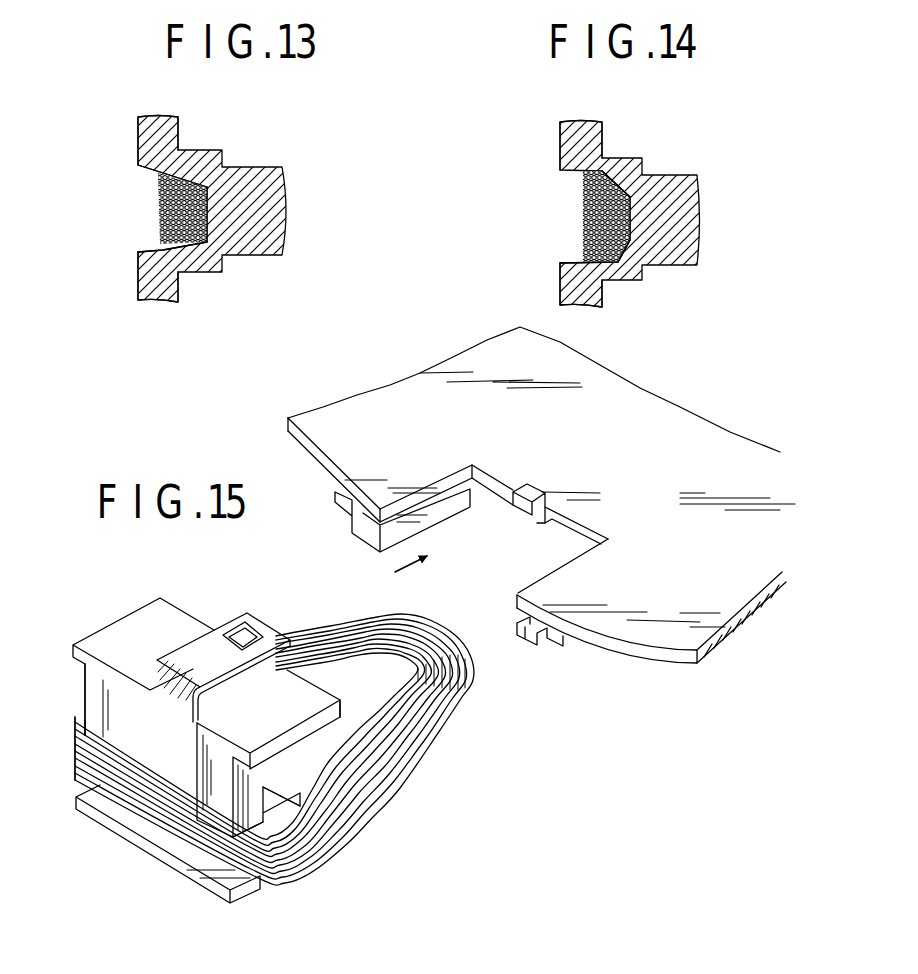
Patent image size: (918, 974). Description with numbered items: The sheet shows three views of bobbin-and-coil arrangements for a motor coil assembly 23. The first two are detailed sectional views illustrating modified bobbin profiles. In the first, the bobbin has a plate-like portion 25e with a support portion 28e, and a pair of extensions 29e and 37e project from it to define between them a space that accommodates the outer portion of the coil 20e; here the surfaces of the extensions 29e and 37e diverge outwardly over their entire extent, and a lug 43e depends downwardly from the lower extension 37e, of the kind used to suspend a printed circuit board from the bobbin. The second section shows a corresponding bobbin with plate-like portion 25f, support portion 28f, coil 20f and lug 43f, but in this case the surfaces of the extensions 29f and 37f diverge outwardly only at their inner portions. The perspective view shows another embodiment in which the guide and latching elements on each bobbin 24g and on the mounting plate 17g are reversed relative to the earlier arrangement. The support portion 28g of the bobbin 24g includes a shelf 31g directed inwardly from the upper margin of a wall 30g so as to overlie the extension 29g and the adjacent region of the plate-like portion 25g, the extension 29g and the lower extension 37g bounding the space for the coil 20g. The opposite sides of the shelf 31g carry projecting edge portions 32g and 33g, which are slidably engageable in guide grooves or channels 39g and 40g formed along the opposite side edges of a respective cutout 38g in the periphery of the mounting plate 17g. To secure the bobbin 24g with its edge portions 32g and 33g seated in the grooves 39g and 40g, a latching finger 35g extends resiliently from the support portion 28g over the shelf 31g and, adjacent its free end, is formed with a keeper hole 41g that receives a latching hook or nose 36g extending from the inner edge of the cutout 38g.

In FIG. 13, the plate-like portion 25e is at (283, 193).
In FIG. 13, the support portion 28e is at (171, 132).
In FIG. 13, the extension 29e is at (146, 169).
In FIG. 13, the coil 20e is at (160, 233).
In FIG. 13, the extension 37e is at (143, 252).
In FIG. 13, the lug 43e is at (172, 290).
In FIG. 14, the plate-like portion 25f is at (688, 195).
In FIG. 14, the support portion 28f is at (605, 135).
In FIG. 14, the extension 29f is at (617, 180).
In FIG. 14, the coil 20f is at (587, 227).
In FIG. 14, the extension 37f is at (613, 258).
In FIG. 14, the lug 43f is at (598, 307).
In FIG. 15, the mounting plate 17g is at (647, 623).
In FIG. 15, the guide groove 40g is at (437, 503).
In FIG. 15, the latching hook 36g is at (530, 491).
In FIG. 15, the cutout 38g is at (585, 530).
In FIG. 15, the guide groove 39g is at (518, 617).
In FIG. 15, the projecting edge portion 33g is at (72, 643).
In FIG. 15, the latching finger 35g is at (193, 653).
In FIG. 15, the keeper hole 41g is at (252, 634).
In FIG. 15, the bobbin 24g is at (330, 683).
In FIG. 15, the plate-like portion 25g is at (392, 687).
In FIG. 15, the support portion 28g is at (83, 698).
In FIG. 15, the wall 30g is at (148, 765).
In FIG. 15, the shelf 31g is at (312, 755).
In FIG. 15, the projecting edge portion 32g is at (338, 713).
In FIG. 15, the extension 29g is at (290, 822).
In FIG. 15, the coil 20g is at (413, 763).
In FIG. 15, the coil assembly 23 is at (73, 732).
In FIG. 15, the extension 37g is at (213, 890).